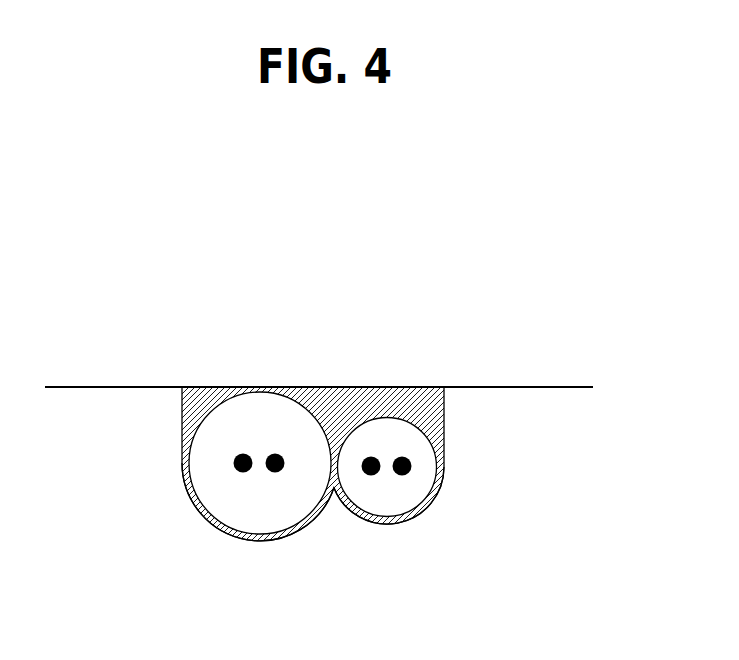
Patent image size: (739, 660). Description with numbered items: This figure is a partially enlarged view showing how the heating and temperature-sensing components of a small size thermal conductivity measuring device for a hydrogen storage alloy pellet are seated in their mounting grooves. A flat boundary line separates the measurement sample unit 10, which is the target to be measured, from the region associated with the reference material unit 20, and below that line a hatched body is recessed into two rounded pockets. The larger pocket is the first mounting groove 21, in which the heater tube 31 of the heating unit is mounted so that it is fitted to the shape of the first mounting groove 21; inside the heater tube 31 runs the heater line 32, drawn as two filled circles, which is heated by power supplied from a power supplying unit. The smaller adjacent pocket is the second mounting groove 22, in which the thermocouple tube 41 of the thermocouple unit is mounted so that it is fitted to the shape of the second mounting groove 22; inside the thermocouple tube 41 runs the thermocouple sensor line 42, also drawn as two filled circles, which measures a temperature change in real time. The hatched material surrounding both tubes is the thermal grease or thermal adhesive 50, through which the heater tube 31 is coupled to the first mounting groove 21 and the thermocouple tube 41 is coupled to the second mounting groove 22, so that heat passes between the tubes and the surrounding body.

The measurement sample unit 10 is at (507, 322).
The reference material unit 20 is at (507, 445).
The thermal grease or thermal adhesive 50 is at (205, 396).
The first mounting groove 21 is at (250, 540).
The second mounting groove 22 is at (405, 518).
The heater tube 31 is at (218, 525).
The heater line 32 is at (244, 456).
The thermocouple tube 41 is at (382, 418).
The thermocouple sensor line 42 is at (365, 473).